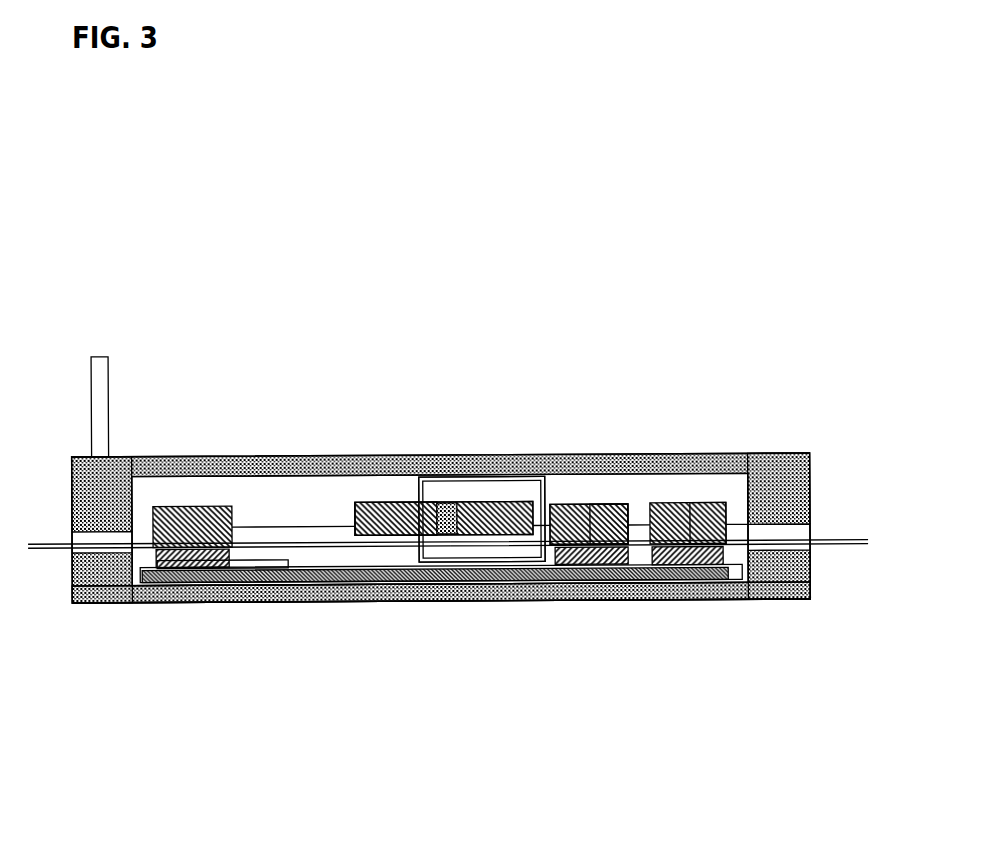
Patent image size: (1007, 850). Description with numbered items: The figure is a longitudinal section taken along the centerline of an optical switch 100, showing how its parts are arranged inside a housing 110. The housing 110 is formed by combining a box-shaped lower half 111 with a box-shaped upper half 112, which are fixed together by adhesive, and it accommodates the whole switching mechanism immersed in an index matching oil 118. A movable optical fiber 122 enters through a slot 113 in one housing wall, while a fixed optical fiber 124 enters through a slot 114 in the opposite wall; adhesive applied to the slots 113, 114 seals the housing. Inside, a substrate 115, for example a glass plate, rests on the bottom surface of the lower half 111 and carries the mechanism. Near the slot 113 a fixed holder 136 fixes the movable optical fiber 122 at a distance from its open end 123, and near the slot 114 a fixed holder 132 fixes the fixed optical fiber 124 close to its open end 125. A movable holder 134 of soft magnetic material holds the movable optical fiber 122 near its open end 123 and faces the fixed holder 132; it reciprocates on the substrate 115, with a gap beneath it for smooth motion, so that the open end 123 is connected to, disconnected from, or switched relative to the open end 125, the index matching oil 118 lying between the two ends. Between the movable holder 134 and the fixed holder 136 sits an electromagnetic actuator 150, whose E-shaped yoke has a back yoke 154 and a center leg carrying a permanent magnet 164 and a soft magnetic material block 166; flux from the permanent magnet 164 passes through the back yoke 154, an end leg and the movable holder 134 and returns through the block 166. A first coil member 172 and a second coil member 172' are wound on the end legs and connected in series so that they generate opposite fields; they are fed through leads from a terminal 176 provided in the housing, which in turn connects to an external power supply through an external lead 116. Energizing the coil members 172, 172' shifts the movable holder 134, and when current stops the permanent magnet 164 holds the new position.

The optical switch 100 is at (126, 225).
The housing 110 is at (813, 666).
The lower half 111 is at (757, 596).
The upper half 112 is at (715, 570).
The slot 113 is at (117, 560).
The slot 114 is at (783, 541).
The substrate 115 is at (307, 580).
The external lead 116 is at (103, 412).
The index matching oil 118 is at (285, 495).
The movable optical fiber 122 is at (52, 550).
The open end of movable optical fiber 123 is at (638, 507).
The fixed optical fiber 124 is at (843, 549).
The open end of fixed optical fiber 125 is at (655, 506).
The fixed holder 132 is at (725, 506).
The movable holder 134 is at (612, 507).
The fixed holder 136 is at (232, 506).
The electromagnetic actuator 150 is at (630, 610).
The back yoke 154 is at (355, 505).
The permanent magnet 164 is at (415, 505).
The soft magnetic material block 166 is at (452, 505).
The first coil member 172 is at (485, 430).
The second coil member 172' is at (488, 450).
The terminal 176 is at (222, 572).